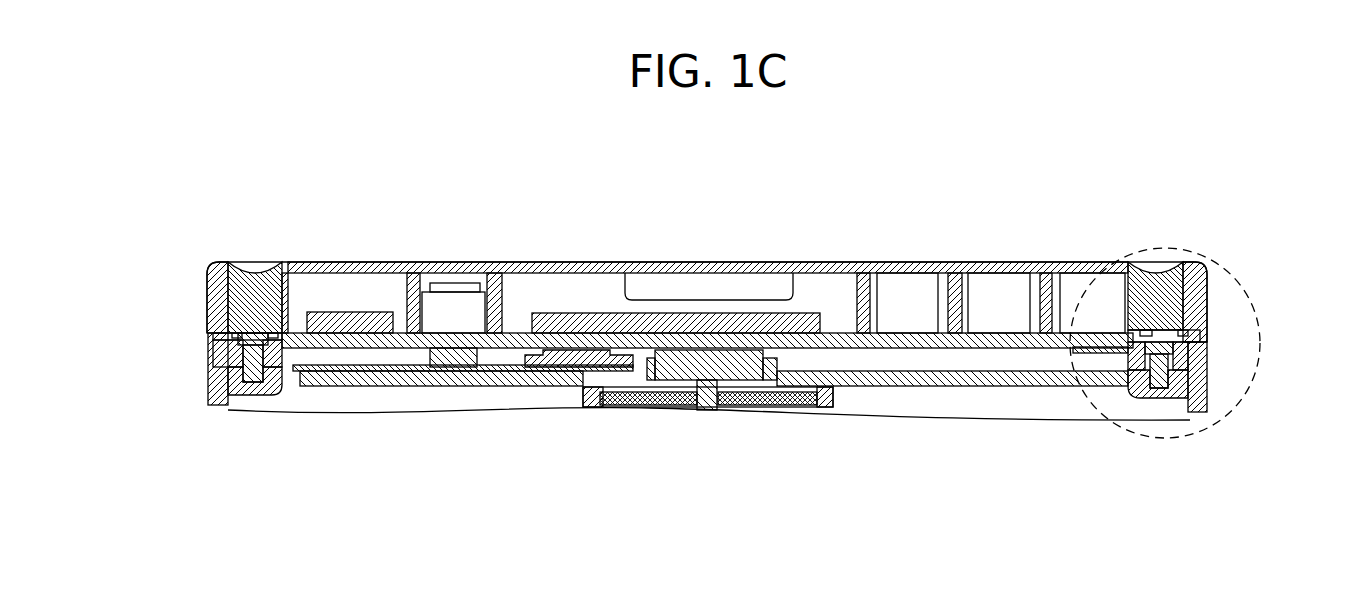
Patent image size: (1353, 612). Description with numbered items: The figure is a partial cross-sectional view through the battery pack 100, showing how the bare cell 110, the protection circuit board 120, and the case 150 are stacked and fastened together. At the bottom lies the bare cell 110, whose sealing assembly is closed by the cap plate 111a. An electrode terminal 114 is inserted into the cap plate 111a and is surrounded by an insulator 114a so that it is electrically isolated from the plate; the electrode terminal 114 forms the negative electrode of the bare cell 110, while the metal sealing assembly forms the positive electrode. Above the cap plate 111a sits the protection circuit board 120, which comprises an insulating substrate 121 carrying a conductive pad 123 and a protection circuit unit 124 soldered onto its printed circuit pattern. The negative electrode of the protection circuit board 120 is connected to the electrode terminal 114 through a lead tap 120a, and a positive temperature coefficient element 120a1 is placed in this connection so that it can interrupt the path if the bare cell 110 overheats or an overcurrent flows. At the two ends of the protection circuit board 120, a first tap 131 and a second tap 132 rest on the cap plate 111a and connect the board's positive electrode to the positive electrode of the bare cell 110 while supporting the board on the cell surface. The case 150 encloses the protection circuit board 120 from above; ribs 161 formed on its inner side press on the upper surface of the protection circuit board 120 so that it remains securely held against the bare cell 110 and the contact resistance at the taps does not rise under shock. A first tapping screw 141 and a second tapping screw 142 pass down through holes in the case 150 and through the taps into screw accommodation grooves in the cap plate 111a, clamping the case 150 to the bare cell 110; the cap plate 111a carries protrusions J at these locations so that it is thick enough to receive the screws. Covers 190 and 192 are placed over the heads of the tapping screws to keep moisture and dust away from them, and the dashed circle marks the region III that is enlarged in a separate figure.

The battery pack 100 is at (247, 135).
The bare cell 110 is at (205, 387).
The cap plate 111a is at (916, 380).
The electrode terminal 114 is at (708, 400).
The insulator 114a is at (642, 398).
The protection circuit board 120 is at (837, 330).
The lead tap 120a is at (448, 370).
The positive temperature coefficient element 120a1 is at (599, 353).
The insulating substrate 121 is at (436, 300).
The conductive pad 123 is at (463, 300).
The protection circuit unit 124 is at (568, 320).
The first tap 131 is at (1084, 357).
The second tap 132 is at (276, 395).
The first tapping screw 141 is at (1192, 332).
The second tapping screw 142 is at (226, 332).
The case 150 is at (950, 264).
The rib 161 is at (505, 292).
The cover 190 is at (255, 280).
The cover 192 is at (1160, 280).
The region III is at (1208, 262).
The protrusion J is at (1145, 416).